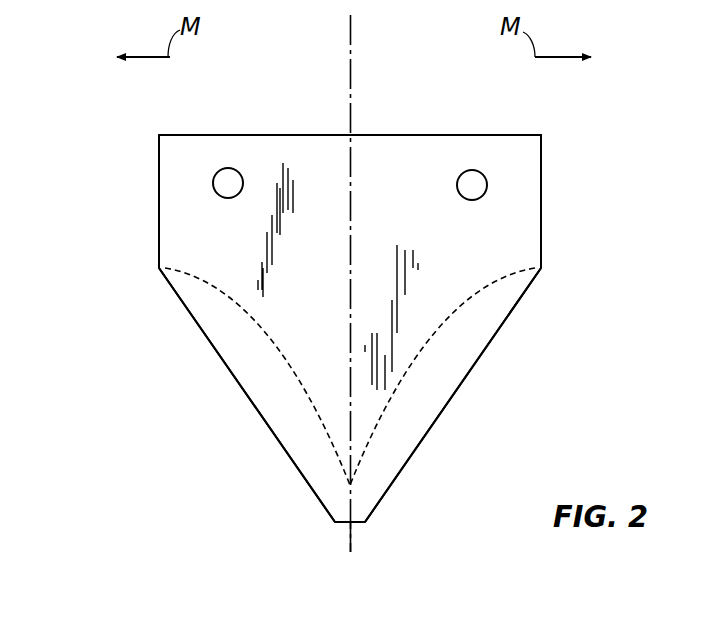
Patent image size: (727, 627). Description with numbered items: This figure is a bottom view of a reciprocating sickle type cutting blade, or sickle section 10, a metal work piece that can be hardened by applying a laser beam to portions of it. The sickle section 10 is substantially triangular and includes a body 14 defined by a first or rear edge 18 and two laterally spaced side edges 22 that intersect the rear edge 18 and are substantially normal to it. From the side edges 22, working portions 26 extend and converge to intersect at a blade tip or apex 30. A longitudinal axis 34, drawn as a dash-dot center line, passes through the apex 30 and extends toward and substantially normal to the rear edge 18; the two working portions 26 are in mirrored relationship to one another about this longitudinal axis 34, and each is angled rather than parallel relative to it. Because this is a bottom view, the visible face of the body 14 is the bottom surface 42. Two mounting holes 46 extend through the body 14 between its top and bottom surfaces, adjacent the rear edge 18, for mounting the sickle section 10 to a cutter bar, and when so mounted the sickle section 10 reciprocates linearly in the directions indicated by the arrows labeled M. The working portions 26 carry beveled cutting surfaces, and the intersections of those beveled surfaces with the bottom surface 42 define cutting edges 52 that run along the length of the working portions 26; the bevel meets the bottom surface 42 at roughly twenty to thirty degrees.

The sickle section 10 is at (106, 151).
The body 14 is at (365, 160).
The rear edge 18 is at (203, 135).
The side edges 22 is at (159, 237).
The working portions 26 is at (241, 432).
The apex 30 is at (355, 522).
The longitudinal axis 34 is at (350, 540).
The bottom surface 42 is at (309, 337).
The mounting holes 46 is at (230, 168).
The cutting edges 52 is at (298, 470).